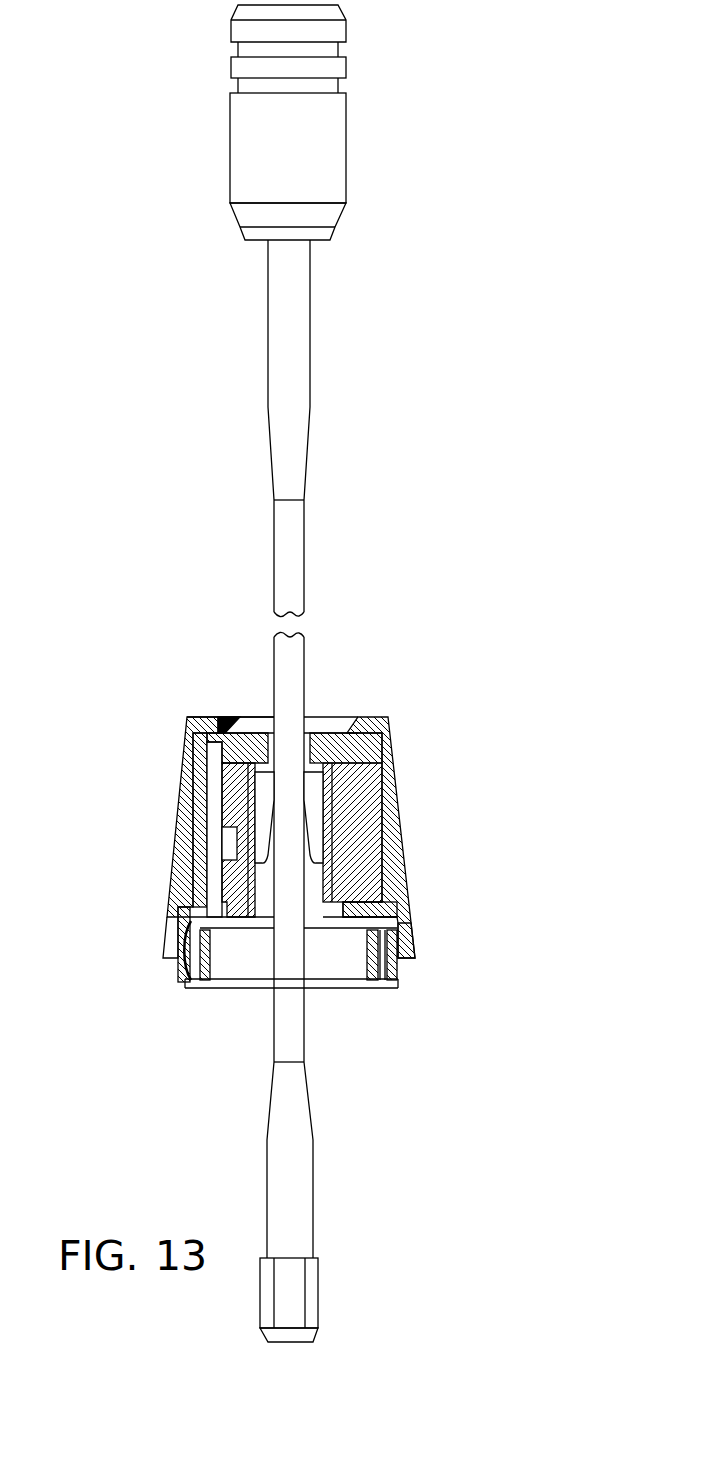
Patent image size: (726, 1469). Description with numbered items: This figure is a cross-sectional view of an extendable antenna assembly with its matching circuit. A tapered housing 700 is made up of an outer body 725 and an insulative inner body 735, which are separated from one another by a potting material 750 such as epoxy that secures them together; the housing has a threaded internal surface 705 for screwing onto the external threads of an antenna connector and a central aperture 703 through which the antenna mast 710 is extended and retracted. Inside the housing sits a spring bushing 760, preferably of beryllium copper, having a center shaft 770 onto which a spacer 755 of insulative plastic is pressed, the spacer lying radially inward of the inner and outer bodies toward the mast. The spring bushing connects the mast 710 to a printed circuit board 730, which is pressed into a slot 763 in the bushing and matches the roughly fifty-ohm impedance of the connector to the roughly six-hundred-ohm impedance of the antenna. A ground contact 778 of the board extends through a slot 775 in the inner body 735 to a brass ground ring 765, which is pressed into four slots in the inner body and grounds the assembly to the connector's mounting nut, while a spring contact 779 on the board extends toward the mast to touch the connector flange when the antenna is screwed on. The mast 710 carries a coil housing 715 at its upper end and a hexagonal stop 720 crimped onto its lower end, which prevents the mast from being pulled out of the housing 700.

The tapered housing 700 is at (187, 717).
The central aperture 703 is at (323, 717).
The threaded internal surface 705 is at (368, 966).
The antenna mast 710 is at (311, 334).
The coil housing 715 is at (348, 143).
The hexagonal stop 720 is at (320, 1292).
The outer body 725 is at (405, 905).
The printed circuit board 730 is at (207, 782).
The inner body 735 is at (402, 972).
The potting material 750 is at (377, 798).
The spacer 755 is at (332, 892).
The spring bushing 760 is at (383, 755).
The slot 763 is at (218, 742).
The ground ring 765 is at (238, 988).
The center shaft 770 is at (313, 843).
The slot 775 is at (180, 968).
The ground contact 778 is at (178, 922).
The spring contact 779 is at (228, 985).